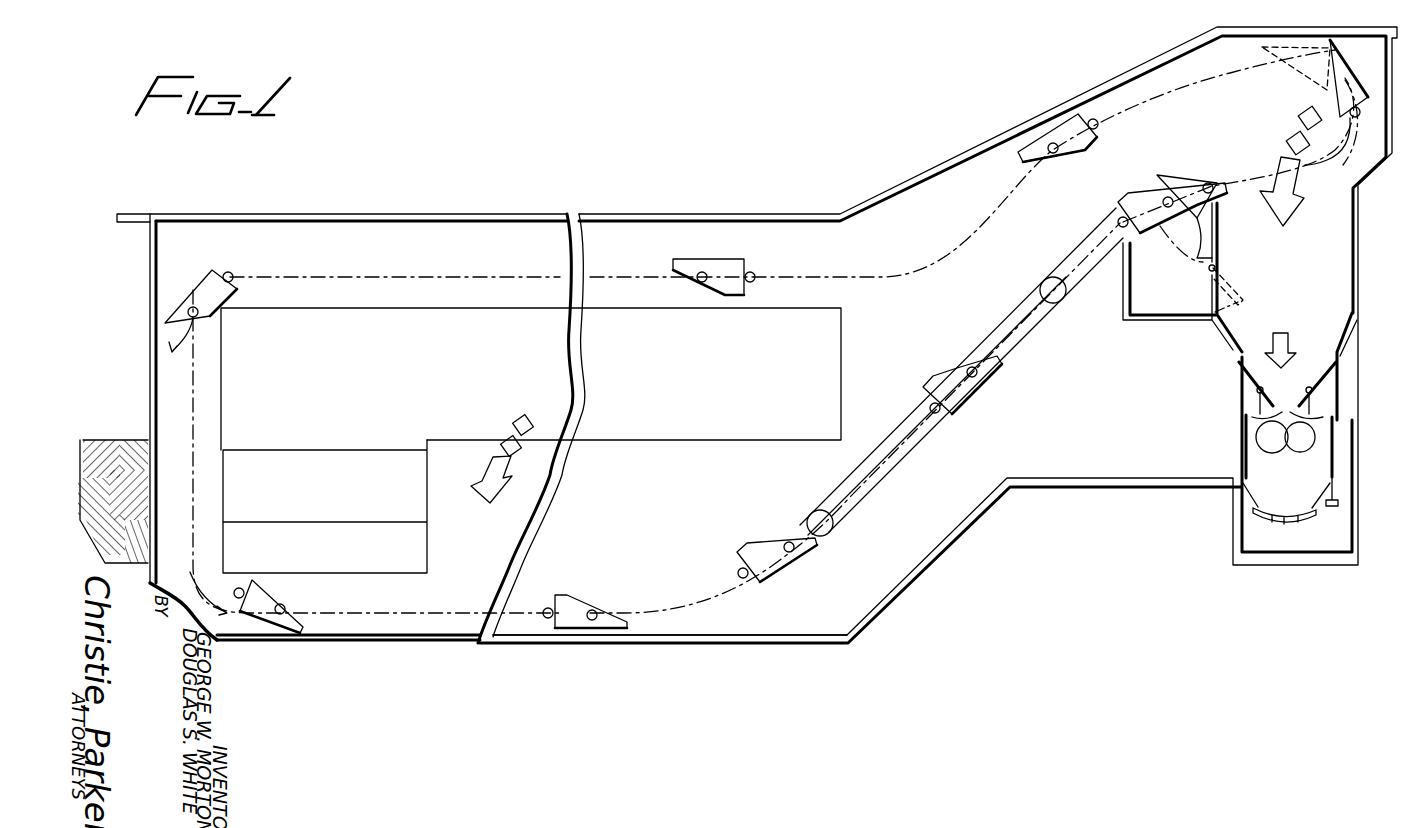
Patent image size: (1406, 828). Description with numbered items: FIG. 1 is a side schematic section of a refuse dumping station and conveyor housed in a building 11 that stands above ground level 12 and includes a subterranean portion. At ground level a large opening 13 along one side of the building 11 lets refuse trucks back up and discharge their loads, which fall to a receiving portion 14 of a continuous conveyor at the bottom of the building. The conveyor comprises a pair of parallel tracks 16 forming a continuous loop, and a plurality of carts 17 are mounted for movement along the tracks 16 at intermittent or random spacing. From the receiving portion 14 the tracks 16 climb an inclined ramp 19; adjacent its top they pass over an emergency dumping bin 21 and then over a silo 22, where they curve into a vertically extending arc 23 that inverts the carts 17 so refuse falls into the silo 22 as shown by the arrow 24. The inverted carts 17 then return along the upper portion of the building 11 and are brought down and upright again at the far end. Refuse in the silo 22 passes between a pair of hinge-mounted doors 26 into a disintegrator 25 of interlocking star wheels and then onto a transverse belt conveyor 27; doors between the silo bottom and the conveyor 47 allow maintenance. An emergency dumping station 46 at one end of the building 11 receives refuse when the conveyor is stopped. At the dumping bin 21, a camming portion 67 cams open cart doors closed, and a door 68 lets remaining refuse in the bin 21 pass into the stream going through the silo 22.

The building 11 is at (405, 214).
The ground level 12 is at (96, 440).
The opening 13 is at (481, 346).
The receiving portion 14 is at (537, 627).
The tracks 16 is at (178, 387).
The carts 17 is at (728, 259).
The inclined ramp 19 is at (1010, 360).
The emergency dumping bin 21 is at (1187, 297).
The silo 22 is at (1325, 277).
The vertically extending arc 23 is at (1352, 165).
The arrow 24 is at (1292, 215).
The disintegrator 25 is at (1312, 445).
The hinge-mounted doors 26 is at (1240, 399).
The conveyor 27 is at (1312, 517).
The emergency dumping station 46 is at (362, 493).
The conveyor 47 is at (1237, 455).
The camming portion 67 is at (1207, 245).
The door 68 is at (1240, 293).